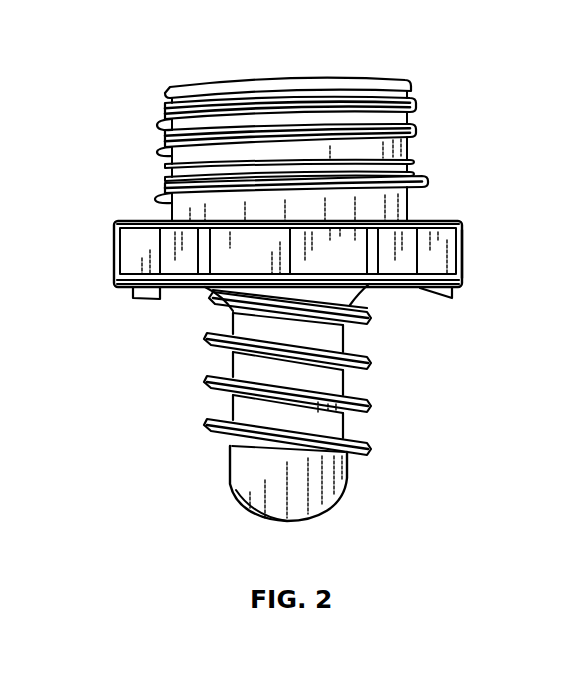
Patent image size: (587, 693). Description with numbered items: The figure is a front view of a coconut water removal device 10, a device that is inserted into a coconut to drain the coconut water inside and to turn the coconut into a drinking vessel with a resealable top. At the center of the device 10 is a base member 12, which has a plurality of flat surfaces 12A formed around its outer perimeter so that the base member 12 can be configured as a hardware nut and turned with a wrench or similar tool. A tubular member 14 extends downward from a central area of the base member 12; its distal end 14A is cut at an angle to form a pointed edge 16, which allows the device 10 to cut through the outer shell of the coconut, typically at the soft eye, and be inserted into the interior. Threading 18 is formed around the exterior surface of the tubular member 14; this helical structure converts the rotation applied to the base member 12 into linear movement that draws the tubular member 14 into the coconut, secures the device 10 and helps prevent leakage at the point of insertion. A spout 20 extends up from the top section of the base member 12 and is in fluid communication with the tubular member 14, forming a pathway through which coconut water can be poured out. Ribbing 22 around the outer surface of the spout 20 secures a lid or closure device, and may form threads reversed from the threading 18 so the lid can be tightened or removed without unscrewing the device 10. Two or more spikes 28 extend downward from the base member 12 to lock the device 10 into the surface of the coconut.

The coconut water removal device 10 is at (132, 58).
The spout 20 is at (400, 92).
The ribbing 22 is at (413, 138).
The base member 12 is at (137, 222).
The flat surfaces 12A is at (463, 250).
The spikes 28 is at (152, 297).
The threading 18 is at (217, 328).
The tubular member 14 is at (340, 367).
The distal end 14A is at (340, 467).
The pointed edge 16 is at (287, 521).